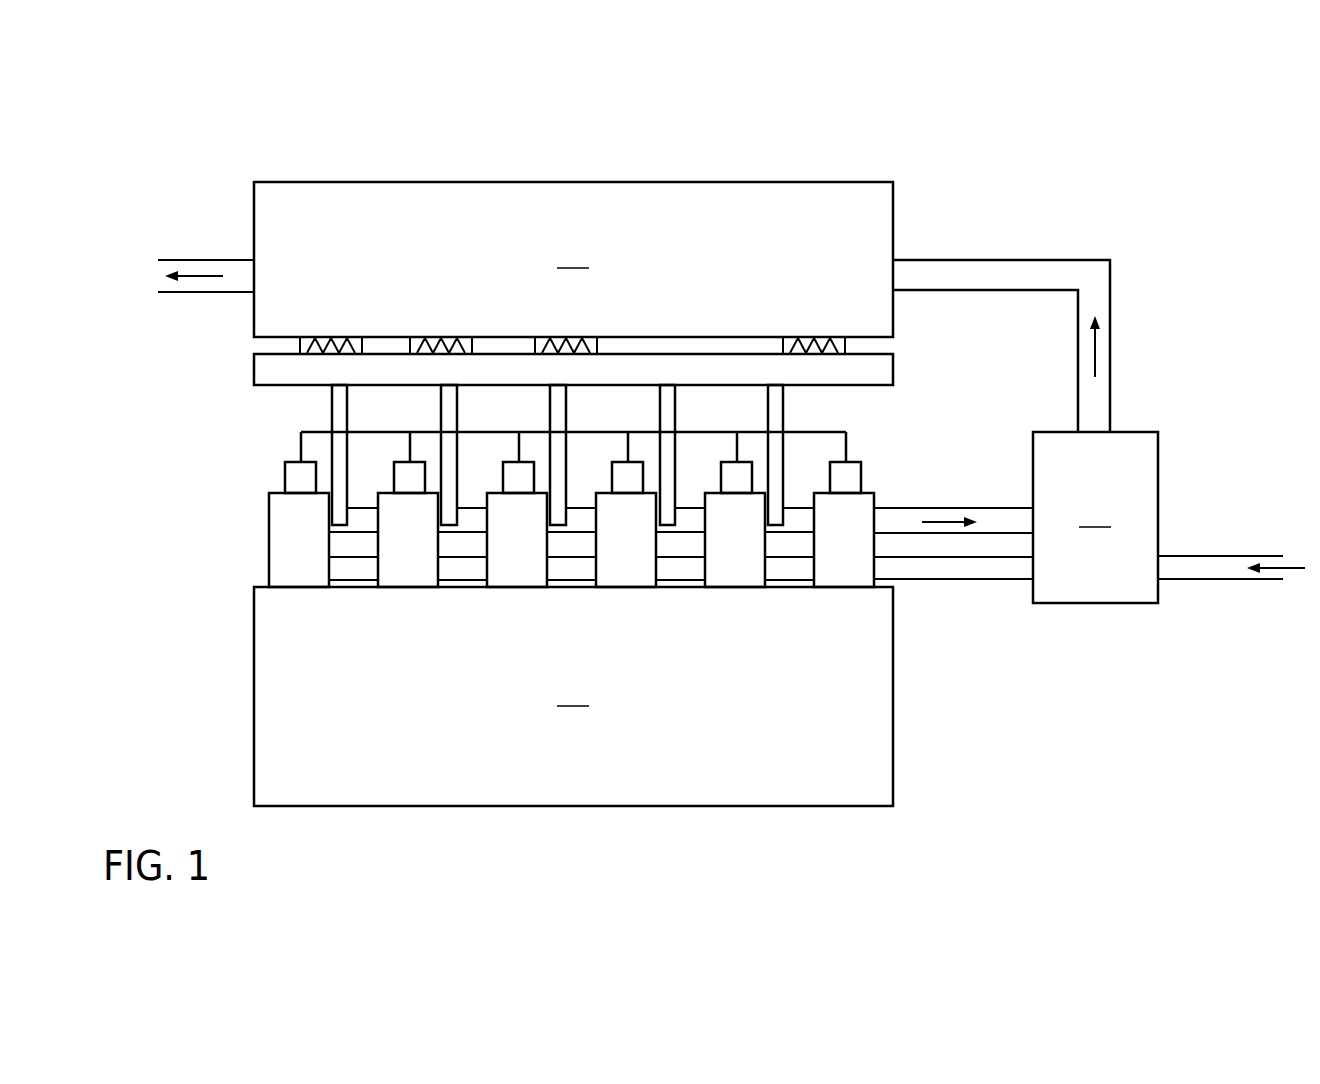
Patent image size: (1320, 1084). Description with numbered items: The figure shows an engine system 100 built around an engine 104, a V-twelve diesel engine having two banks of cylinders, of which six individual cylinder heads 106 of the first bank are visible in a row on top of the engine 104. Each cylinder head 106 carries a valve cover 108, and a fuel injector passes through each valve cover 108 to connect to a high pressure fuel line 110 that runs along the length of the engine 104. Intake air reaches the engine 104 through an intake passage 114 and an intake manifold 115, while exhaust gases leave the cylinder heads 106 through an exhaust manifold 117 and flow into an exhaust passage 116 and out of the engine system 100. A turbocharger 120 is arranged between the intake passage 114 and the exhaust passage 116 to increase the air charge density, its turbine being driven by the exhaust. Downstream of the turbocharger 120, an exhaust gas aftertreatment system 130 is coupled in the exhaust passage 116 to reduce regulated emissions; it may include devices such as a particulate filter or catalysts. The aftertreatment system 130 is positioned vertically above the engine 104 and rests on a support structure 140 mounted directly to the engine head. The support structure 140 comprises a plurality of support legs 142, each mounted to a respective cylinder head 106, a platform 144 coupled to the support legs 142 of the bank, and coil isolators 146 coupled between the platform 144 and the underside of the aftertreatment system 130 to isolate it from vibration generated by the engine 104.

The engine system 100 is at (1114, 134).
The engine 104 is at (573, 696).
The cylinder head 106 is at (315, 551).
The valve cover 108 is at (284, 478).
The high pressure fuel line 110 is at (308, 431).
The intake passage 114 is at (1187, 580).
The intake manifold 115 is at (683, 570).
The exhaust passage 116 is at (1028, 260).
The exhaust manifold 117 is at (472, 523).
The turbocharger 120 is at (1095, 517).
The exhaust gas aftertreatment system 130 is at (573, 259).
The support structure 140 is at (946, 384).
The support leg 142 is at (783, 401).
The platform 144 is at (254, 370).
The coil isolator 146 is at (847, 347).